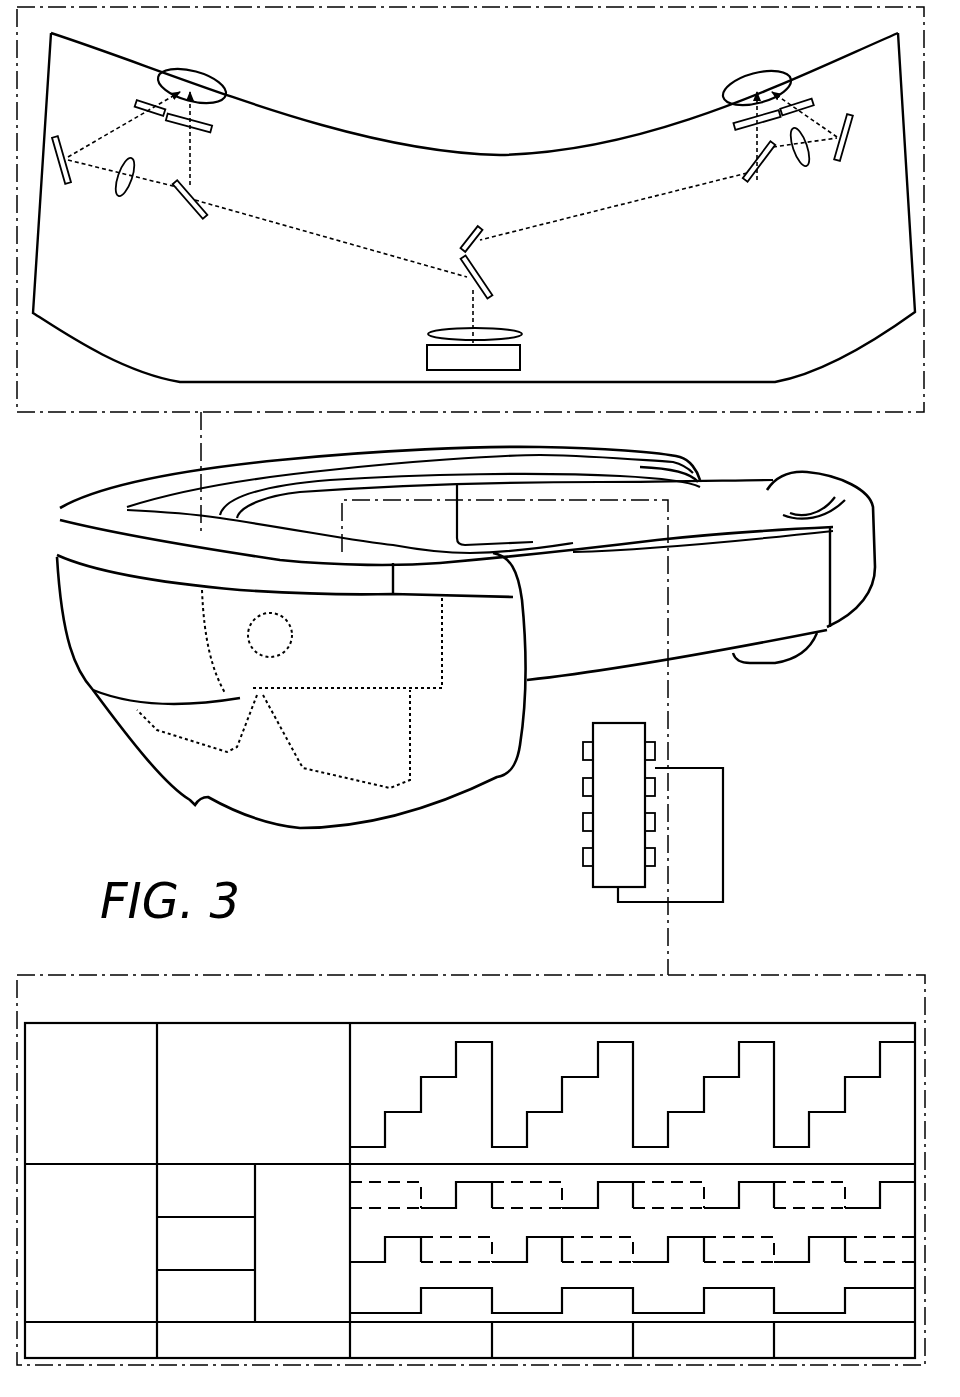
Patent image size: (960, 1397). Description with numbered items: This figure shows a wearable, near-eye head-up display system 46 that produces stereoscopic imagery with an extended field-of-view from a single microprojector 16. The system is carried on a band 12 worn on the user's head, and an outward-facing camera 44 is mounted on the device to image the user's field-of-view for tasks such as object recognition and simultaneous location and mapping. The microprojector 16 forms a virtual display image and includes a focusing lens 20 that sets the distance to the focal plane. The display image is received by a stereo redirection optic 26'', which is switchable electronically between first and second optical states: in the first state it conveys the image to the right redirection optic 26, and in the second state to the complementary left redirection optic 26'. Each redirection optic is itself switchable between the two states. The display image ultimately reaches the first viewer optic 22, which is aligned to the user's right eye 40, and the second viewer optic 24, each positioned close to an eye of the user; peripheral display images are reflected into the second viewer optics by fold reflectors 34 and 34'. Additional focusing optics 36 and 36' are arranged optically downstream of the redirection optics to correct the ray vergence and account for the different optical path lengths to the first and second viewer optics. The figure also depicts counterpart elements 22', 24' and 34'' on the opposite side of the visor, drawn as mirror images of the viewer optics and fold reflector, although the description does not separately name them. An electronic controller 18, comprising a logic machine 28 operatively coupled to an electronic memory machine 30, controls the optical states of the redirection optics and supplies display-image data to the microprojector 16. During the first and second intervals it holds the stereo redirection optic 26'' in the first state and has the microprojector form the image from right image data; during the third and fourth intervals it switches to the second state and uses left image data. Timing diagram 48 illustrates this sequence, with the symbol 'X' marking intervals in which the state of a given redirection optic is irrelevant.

The band 12 is at (586, 615).
The microprojector 16 is at (473, 357).
The electronic controller 18 is at (667, 797).
The focusing lens 20 is at (430, 333).
The first viewer optic 22 is at (228, 120).
The right forward waveguide 22' is at (735, 143).
The second viewer optic 24 is at (124, 97).
The right peripheral waveguide 24' is at (837, 98).
The right redirection optic 26 is at (170, 208).
The left redirection optic 26' is at (745, 183).
The stereo redirection optic 26'' is at (511, 276).
The logic machine 28 is at (662, 849).
The electronic memory machine 30 is at (610, 819).
The fold reflector 34 is at (70, 146).
The fold reflector 34' is at (853, 152).
The central mirror 34'' is at (443, 232).
The additional focusing optic 36 is at (108, 189).
The additional focusing optic 36' is at (794, 161).
The right eye 40 is at (222, 88).
The camera 44 is at (260, 646).
The head-up display system 46 is at (233, 294).
The timing diagram 48 is at (463, 1014).